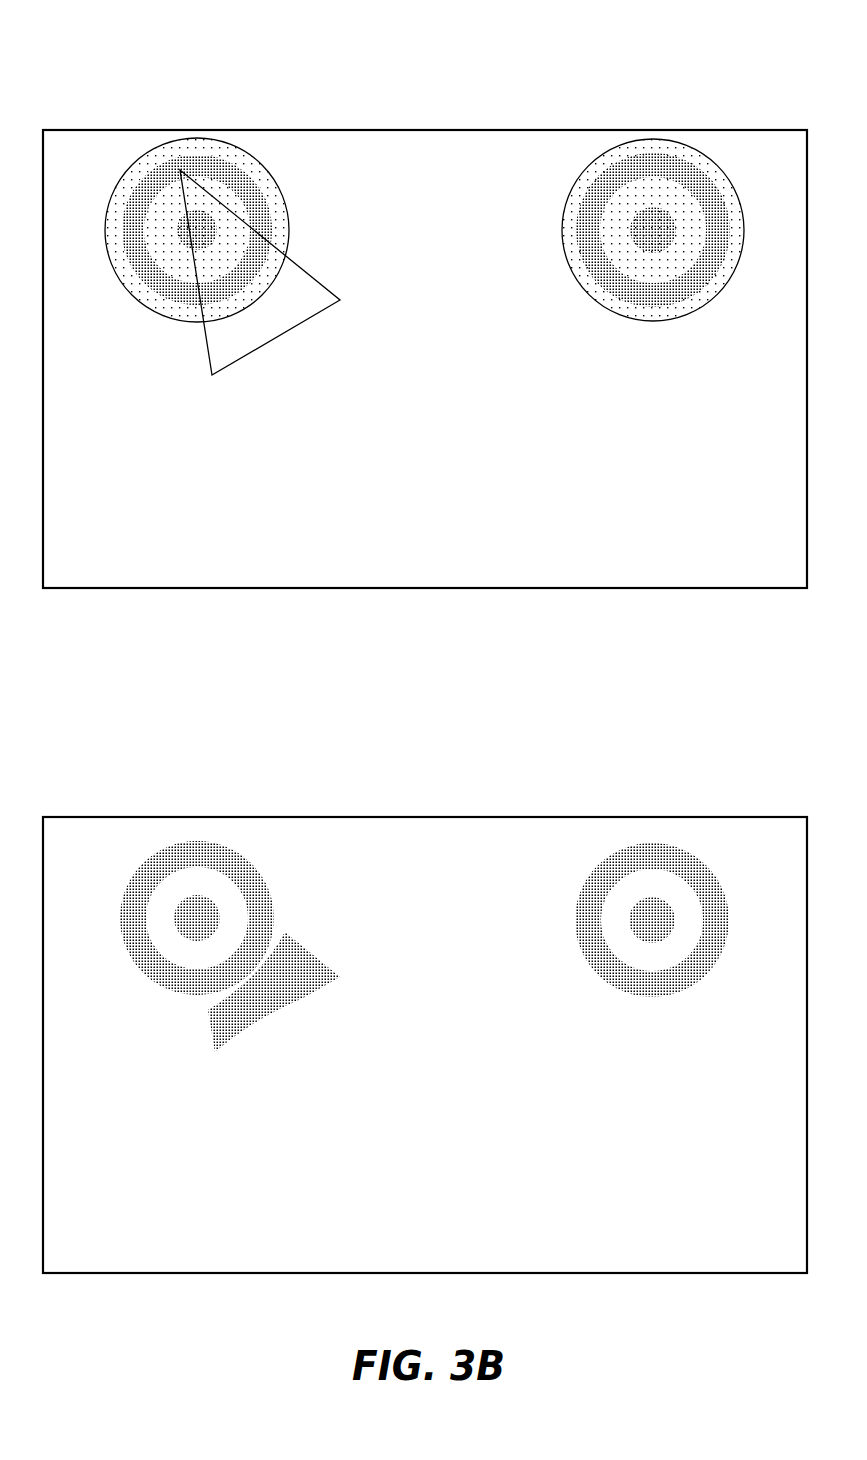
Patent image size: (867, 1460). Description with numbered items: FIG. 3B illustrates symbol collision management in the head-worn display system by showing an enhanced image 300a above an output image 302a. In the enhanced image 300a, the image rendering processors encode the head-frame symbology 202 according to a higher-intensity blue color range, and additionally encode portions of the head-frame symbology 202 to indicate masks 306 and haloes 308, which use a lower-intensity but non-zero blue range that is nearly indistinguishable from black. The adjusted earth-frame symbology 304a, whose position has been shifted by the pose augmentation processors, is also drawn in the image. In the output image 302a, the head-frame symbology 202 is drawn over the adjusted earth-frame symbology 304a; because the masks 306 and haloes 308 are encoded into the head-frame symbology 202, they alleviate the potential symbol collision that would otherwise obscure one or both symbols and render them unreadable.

The enhanced image 300a is at (157, 50).
The output image 302a is at (135, 708).
The head-frame symbology 202 is at (178, 228).
The masks 306 is at (220, 193).
The haloes 308 is at (277, 213).
The adjusted earth-frame symbology 304a is at (295, 305).